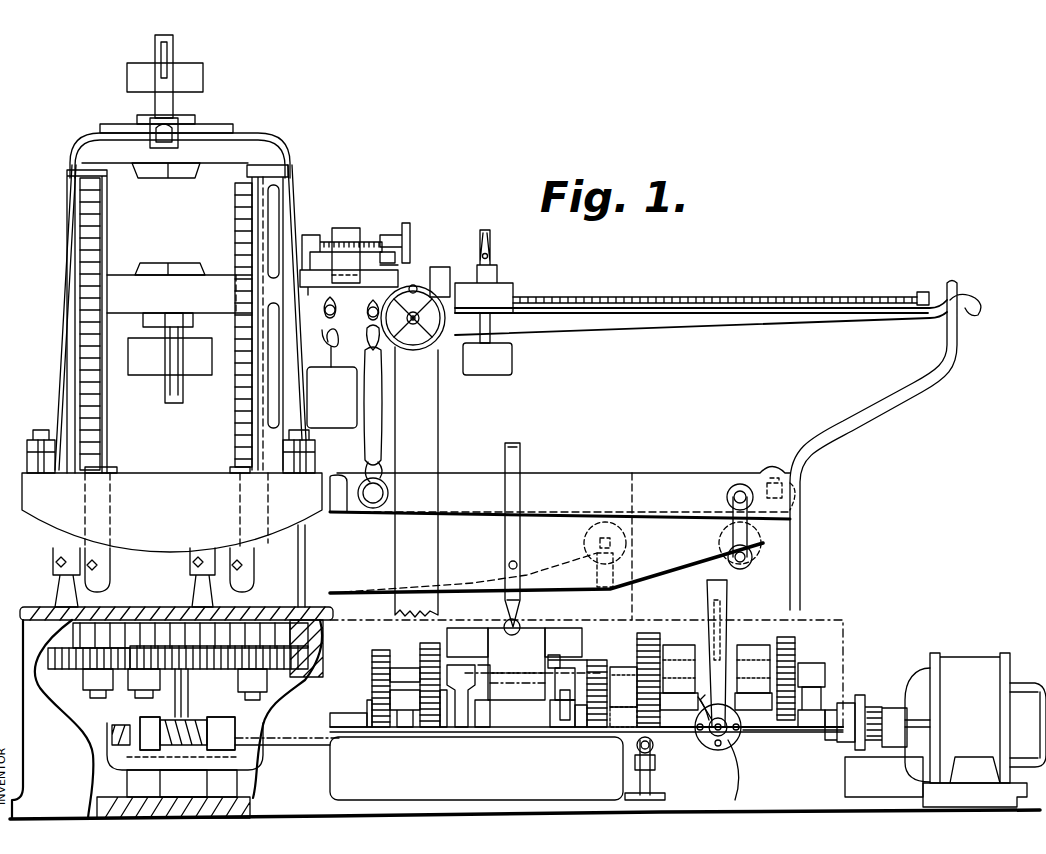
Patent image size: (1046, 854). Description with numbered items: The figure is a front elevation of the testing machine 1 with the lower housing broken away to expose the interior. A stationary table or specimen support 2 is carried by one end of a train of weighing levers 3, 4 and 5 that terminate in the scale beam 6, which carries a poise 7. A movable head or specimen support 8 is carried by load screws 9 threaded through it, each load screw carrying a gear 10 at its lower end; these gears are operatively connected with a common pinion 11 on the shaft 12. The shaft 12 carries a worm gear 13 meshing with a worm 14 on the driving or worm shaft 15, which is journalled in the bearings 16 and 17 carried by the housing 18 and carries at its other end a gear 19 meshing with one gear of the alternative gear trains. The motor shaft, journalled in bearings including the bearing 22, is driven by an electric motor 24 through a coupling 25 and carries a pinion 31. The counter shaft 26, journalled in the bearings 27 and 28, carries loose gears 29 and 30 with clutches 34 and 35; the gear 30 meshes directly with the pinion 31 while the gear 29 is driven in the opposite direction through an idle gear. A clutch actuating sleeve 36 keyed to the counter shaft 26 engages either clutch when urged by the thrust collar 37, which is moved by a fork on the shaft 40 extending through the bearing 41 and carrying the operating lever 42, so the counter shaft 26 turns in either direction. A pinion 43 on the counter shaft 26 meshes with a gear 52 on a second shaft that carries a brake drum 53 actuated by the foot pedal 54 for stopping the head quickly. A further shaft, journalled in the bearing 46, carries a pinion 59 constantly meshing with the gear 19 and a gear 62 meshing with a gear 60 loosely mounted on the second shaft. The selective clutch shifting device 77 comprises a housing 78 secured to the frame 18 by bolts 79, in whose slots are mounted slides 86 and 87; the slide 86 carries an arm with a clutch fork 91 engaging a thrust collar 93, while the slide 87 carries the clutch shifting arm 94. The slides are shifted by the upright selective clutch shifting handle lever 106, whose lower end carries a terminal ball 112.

The testing machine 1 is at (630, 395).
The stationary table or specimen support 2 is at (172, 512).
The weighing lever 3 is at (562, 544).
The weighing lever 4 is at (680, 565).
The weighing lever 5 is at (385, 588).
The scale beam 6 is at (650, 330).
The poise 7 is at (484, 302).
The movable head or specimen support 8 is at (179, 339).
The load screws 9 is at (83, 244).
The gear 10 is at (50, 655).
The common pinion 11 is at (185, 660).
The shaft 12 is at (190, 700).
The worm gear 13 is at (135, 728).
The worm 14 is at (182, 777).
The driving or worm shaft 15 is at (250, 740).
The bearing 16 is at (145, 735).
The bearing 17 is at (348, 706).
The housing 18 is at (467, 719).
The gear 19 is at (383, 730).
The bearing 22 is at (847, 703).
The electric motor 24 is at (975, 730).
The coupling 25 is at (868, 695).
The counter shaft 26 is at (785, 637).
The bearing 27 is at (620, 668).
The bearing 28 is at (812, 663).
The loose gear 29 is at (645, 633).
The loose gear 30 is at (800, 620).
The pinion 31 is at (798, 728).
The clutch 34 is at (678, 648).
The clutch 35 is at (752, 641).
The clutch actuating collar or sleeve 36 is at (742, 715).
The thrust collar 37 is at (720, 620).
The shaft 40 is at (716, 737).
The bearing 41 is at (738, 795).
The operating lever or handle 42 is at (712, 575).
The pinion 43 is at (597, 660).
The bearing 46 is at (400, 668).
The gear 52 is at (585, 730).
The brake drum 53 is at (676, 720).
The foot pedal 54 is at (630, 790).
The pinion 59 is at (372, 660).
The gear 60 is at (425, 730).
The gear 62 is at (430, 643).
The selective clutch shifting device 77 is at (528, 608).
The housing 78 is at (516, 664).
The bolts 79 is at (480, 728).
The slide 86 is at (563, 642).
The slide 87 is at (467, 642).
The clutch fork 91 is at (540, 680).
The thrust collar 93 is at (555, 710).
The clutch shifting arm 94 is at (460, 720).
The selective clutch shifting handle lever 106 is at (518, 472).
The terminal ball 112 is at (506, 632).